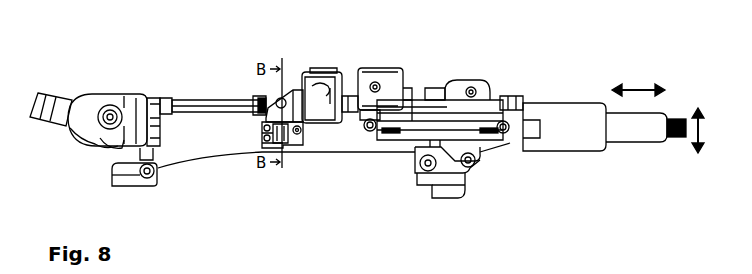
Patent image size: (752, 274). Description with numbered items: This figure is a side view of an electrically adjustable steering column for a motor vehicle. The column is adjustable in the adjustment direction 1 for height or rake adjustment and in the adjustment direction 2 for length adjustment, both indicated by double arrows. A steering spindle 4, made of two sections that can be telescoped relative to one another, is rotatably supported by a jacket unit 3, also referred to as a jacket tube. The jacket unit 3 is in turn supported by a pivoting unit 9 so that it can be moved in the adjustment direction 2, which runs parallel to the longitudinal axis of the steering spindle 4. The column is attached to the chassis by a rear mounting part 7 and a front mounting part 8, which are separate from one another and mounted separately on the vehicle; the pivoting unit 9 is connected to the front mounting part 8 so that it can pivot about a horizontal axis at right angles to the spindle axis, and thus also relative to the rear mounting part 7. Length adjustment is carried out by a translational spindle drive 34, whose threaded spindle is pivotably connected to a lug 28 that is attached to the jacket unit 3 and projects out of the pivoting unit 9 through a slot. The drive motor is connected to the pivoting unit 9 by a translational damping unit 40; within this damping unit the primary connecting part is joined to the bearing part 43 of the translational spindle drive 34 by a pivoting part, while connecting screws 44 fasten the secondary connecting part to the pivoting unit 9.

The adjustment direction 1 is at (693, 152).
The adjustment direction 2 is at (632, 80).
The jacket unit 3 is at (565, 150).
The steering spindle 4 is at (636, 140).
The rear mounting part 7 is at (435, 200).
The front mounting part 8 is at (121, 180).
The pivoting unit 9 is at (177, 166).
The lug 28 is at (452, 80).
The translational spindle drive 34 is at (323, 63).
The translational damping unit 40 is at (289, 152).
The bearing part 43 is at (346, 72).
The connecting screws 44 is at (262, 157).